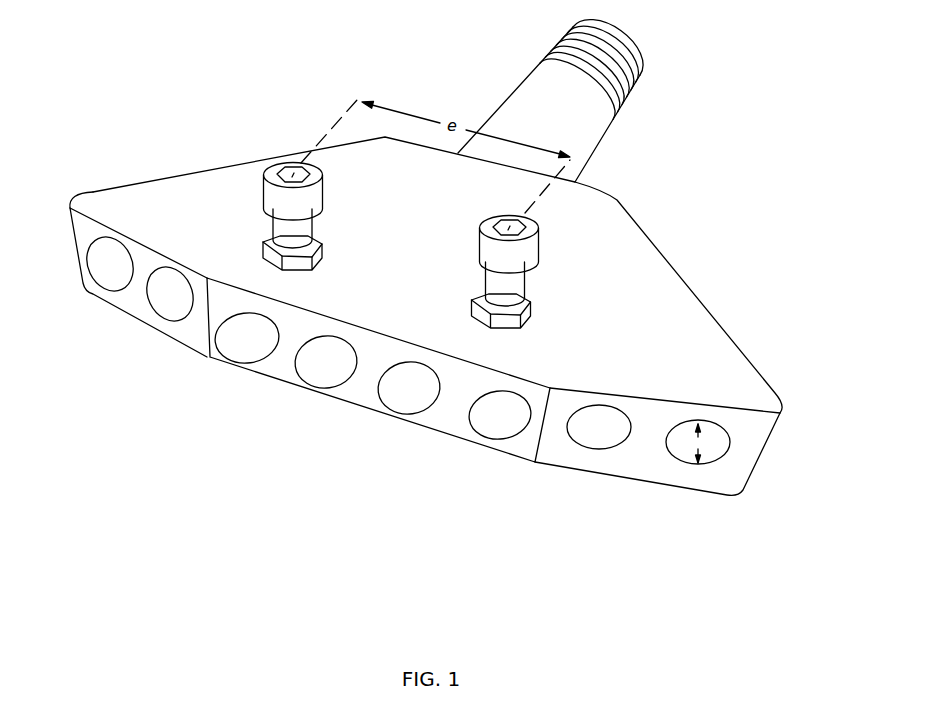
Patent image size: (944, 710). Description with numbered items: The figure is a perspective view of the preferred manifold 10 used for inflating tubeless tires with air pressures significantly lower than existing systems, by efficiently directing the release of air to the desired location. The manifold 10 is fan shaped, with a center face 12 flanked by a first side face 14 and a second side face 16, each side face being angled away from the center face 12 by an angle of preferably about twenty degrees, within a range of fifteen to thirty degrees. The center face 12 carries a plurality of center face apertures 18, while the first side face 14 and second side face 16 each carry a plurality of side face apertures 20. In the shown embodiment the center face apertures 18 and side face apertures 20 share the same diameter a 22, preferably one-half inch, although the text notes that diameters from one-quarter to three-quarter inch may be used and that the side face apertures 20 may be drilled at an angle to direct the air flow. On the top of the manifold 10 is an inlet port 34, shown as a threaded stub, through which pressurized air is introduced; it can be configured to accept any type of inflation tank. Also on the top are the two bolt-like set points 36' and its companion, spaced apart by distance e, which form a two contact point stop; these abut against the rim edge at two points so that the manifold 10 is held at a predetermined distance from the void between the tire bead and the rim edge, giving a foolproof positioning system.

The manifold 10 is at (707, 217).
The center face 12 is at (353, 405).
The first side face 14 is at (133, 318).
The second side face 16 is at (660, 483).
The center face apertures 18 is at (230, 358).
The side face apertures 20 is at (105, 285).
The diameter a 22 is at (707, 453).
The inlet port 34 is at (605, 142).
The set point 36' is at (621, 272).